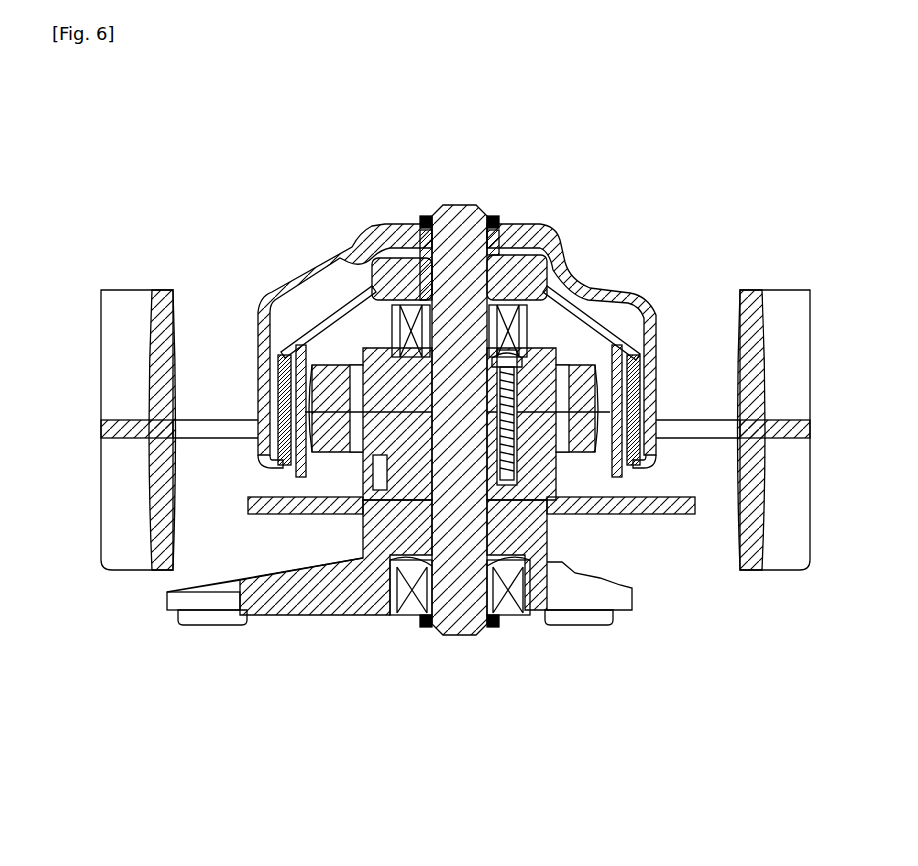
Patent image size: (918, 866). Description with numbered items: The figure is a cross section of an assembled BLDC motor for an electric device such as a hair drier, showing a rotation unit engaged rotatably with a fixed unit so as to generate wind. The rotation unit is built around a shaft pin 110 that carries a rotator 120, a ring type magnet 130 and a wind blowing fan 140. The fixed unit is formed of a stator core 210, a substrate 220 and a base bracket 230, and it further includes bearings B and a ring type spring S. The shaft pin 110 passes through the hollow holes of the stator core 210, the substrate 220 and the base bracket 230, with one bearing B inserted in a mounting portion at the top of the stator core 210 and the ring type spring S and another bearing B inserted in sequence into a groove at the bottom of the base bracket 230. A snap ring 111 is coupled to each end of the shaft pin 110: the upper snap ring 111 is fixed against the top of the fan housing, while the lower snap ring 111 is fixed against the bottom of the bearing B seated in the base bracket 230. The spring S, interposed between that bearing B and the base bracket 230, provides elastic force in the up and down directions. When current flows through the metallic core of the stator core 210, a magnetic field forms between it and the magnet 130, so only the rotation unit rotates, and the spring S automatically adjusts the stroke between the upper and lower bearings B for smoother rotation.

The shaft pin 110 is at (458, 208).
The snap ring 111 is at (423, 213).
The rotator 120 is at (320, 318).
The ring type magnet 130 is at (632, 380).
The wind blowing fan 140 is at (272, 302).
The stator core 210 is at (576, 352).
The substrate 220 is at (673, 515).
The base bracket 230 is at (337, 617).
The bearing B is at (498, 350).
The ring type spring S is at (413, 560).